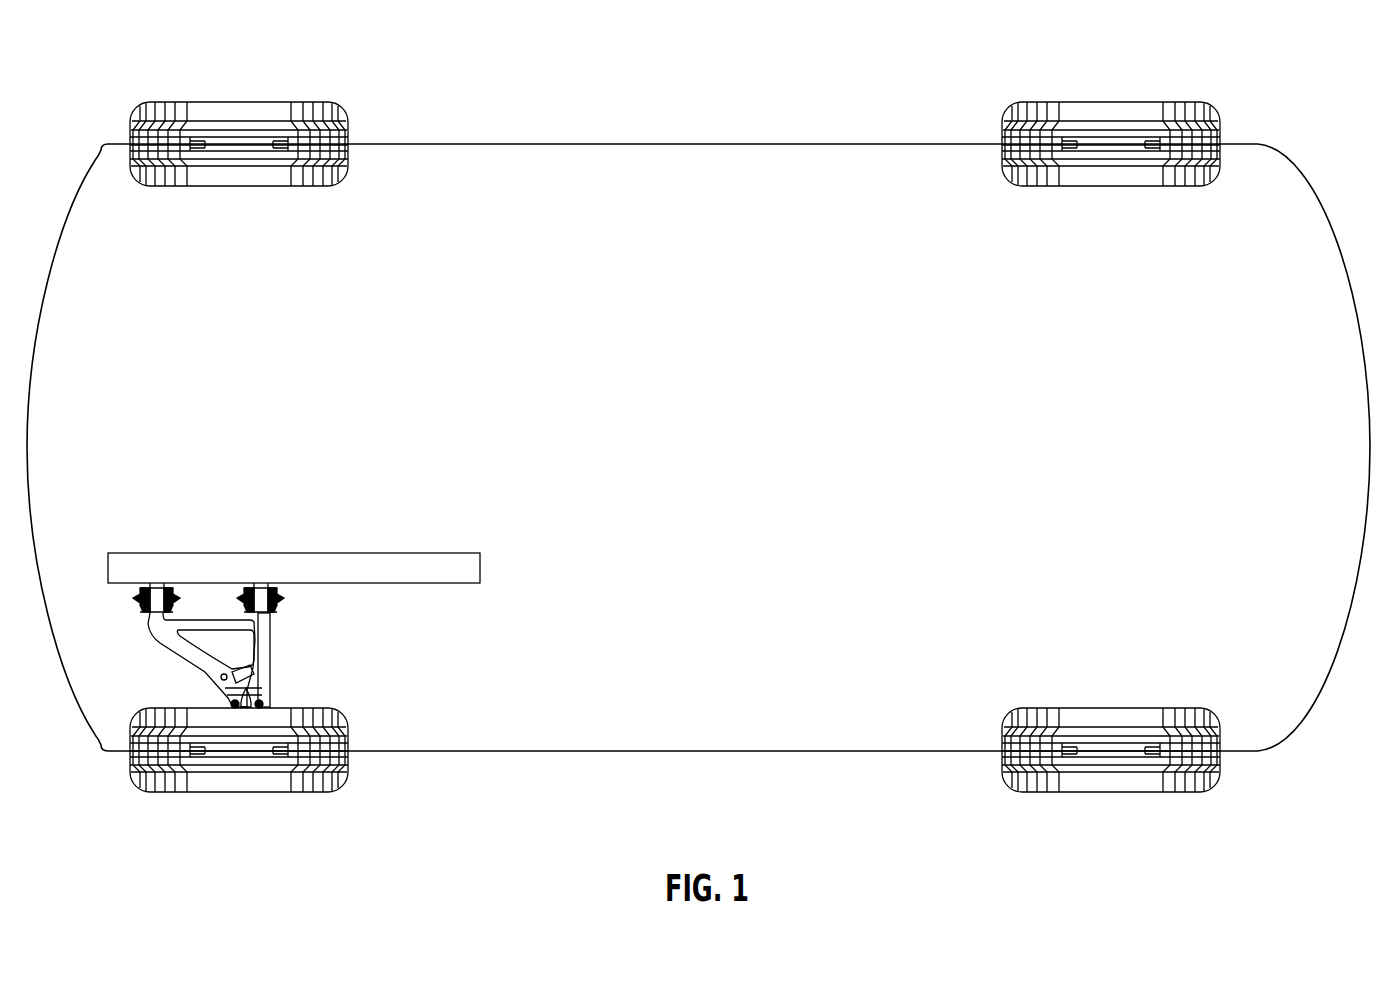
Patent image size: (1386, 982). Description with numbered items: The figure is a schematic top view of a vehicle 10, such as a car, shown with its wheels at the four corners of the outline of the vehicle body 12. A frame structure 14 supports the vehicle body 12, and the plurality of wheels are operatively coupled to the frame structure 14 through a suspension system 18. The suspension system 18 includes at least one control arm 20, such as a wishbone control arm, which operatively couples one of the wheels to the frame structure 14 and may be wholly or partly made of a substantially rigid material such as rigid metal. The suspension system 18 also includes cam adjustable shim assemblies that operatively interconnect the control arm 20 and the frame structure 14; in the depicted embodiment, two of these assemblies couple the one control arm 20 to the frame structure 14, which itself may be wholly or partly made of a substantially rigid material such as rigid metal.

The vehicle 10 is at (948, 62).
The vehicle body 12 is at (507, 143).
The frame structure 14 is at (160, 553).
The suspension system 18 is at (283, 676).
The control arm 20 is at (162, 640).